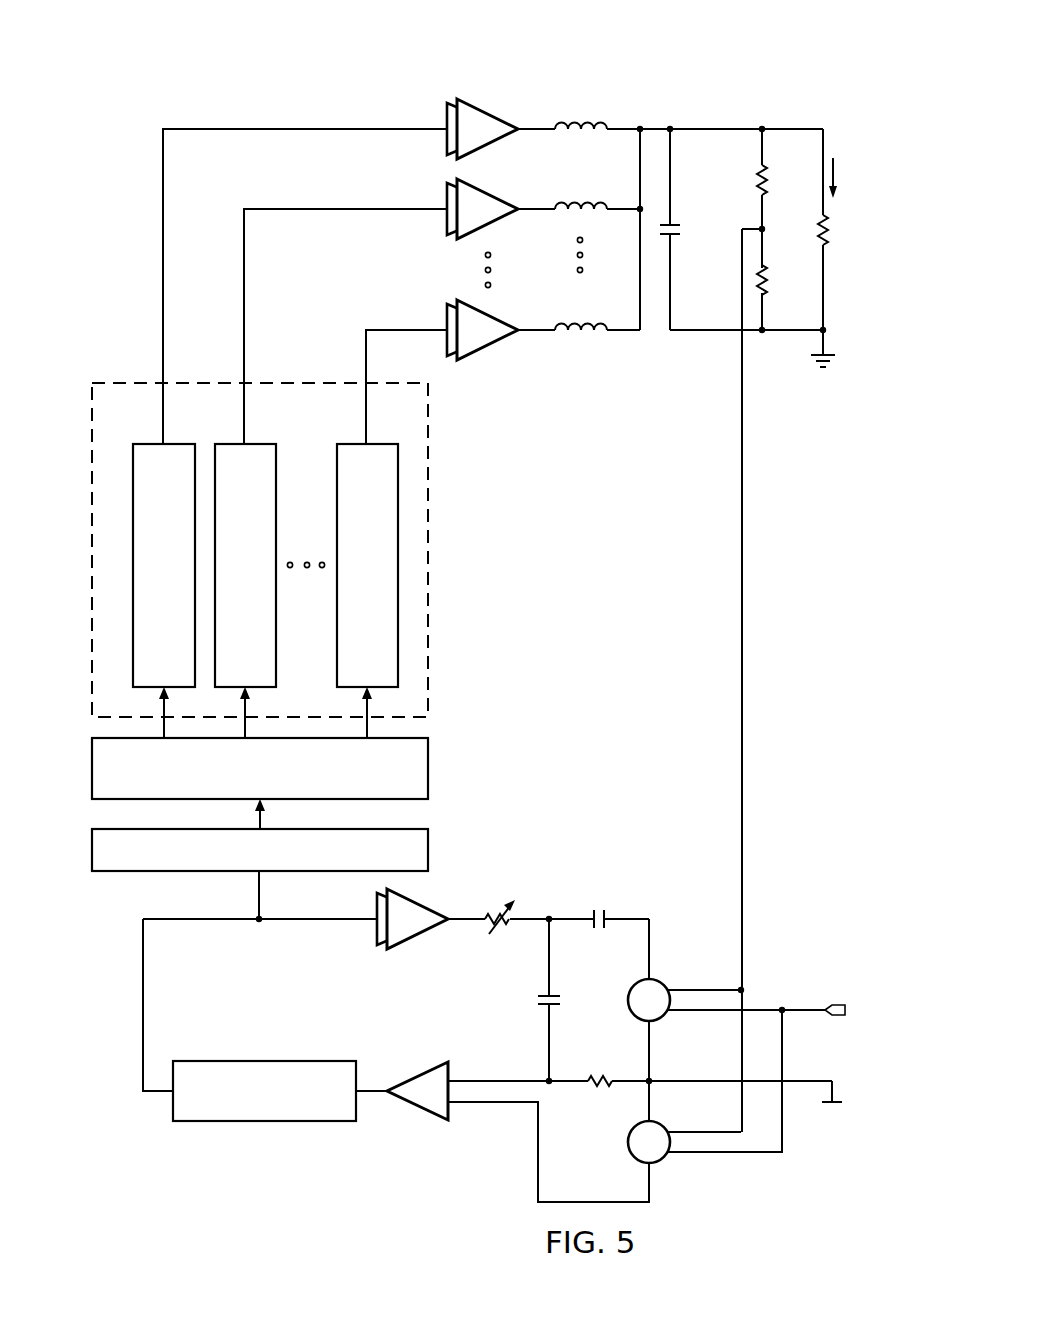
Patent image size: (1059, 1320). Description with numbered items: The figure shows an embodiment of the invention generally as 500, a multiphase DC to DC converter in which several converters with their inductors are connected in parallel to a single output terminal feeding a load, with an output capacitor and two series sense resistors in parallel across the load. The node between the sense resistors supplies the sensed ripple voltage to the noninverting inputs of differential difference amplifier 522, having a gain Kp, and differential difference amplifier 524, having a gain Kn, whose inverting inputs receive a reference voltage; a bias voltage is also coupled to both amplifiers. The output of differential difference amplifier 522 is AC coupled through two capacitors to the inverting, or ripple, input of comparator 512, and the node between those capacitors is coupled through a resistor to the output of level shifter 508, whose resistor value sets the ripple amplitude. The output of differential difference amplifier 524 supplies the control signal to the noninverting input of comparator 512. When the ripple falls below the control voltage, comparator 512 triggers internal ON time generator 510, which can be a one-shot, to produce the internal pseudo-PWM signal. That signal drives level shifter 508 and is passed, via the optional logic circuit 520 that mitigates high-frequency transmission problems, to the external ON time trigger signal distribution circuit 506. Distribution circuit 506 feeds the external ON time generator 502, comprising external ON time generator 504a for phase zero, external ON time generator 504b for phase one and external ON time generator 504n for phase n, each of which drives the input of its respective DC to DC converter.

The embodiment of the present invention 500 is at (702, 60).
The external ON time generator 502 is at (436, 535).
The external ON time generator for phase 0 504a is at (141, 443).
The external ON time generator for phase 1 504b is at (224, 443).
The external ON time generator for phase n 504n is at (346, 443).
The external ON time trigger signal distribution circuit 506 is at (428, 767).
The level shifter 508 is at (418, 936).
The internal ON time generator 510 is at (265, 1124).
The comparator 512 is at (410, 1110).
The logic circuit 520 is at (428, 850).
The differential difference amplifier 522 is at (664, 1016).
The differential difference amplifier 524 is at (664, 1158).